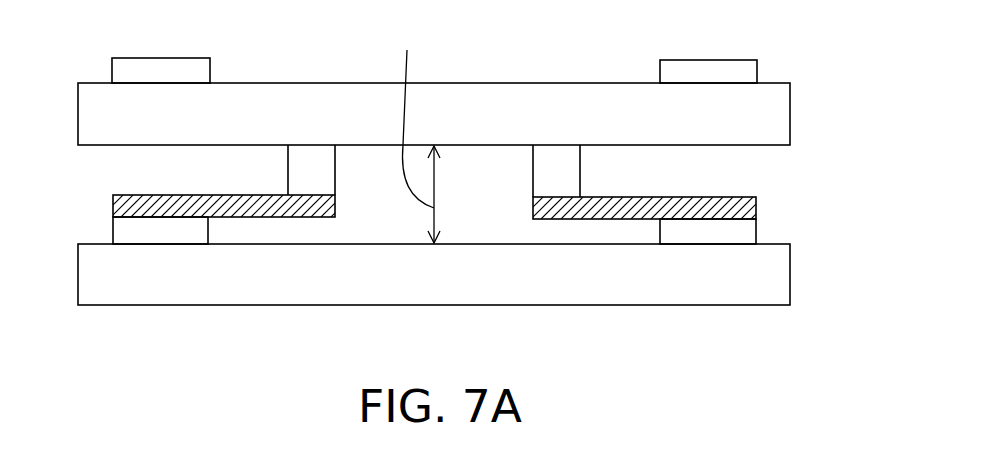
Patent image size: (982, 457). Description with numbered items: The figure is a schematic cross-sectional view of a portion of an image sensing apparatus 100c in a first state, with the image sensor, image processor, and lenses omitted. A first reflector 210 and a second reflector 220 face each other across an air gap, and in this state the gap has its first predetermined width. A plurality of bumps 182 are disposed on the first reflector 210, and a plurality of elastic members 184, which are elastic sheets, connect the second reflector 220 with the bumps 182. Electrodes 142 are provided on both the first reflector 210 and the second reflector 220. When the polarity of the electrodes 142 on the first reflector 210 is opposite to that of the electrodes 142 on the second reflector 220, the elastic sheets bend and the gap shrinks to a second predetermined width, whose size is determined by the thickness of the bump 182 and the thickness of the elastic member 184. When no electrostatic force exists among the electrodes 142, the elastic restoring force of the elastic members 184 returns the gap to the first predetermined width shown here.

The image sensing apparatus 100c is at (856, 342).
The electrodes 142 is at (122, 72).
The bump 182 is at (556, 170).
The elastic member 184 is at (748, 208).
The first reflector 210 is at (772, 125).
The second reflector 220 is at (772, 284).